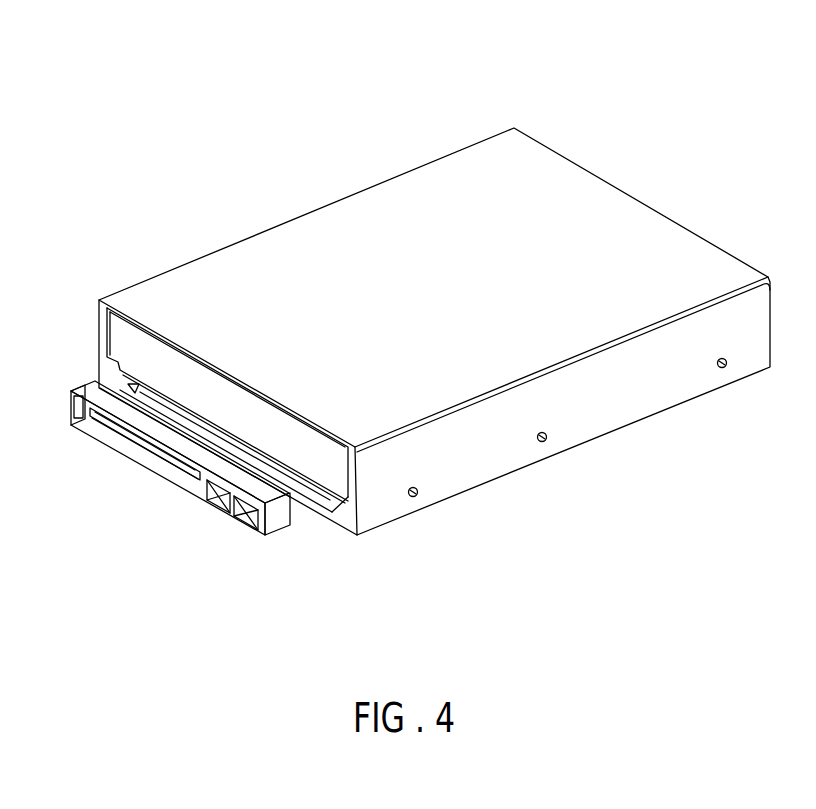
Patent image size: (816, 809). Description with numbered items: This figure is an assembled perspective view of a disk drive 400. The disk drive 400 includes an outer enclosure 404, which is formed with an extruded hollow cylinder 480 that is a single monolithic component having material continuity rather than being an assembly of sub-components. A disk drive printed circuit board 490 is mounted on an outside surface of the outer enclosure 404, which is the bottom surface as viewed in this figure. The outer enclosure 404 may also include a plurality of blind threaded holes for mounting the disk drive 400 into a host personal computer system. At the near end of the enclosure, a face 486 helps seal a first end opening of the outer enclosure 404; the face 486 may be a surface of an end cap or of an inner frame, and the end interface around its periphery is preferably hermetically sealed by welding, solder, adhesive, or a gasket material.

The disk drive 400 is at (177, 76).
The outer enclosure 404 is at (386, 152).
The extruded hollow cylinder 480 is at (282, 237).
The face 486 is at (130, 342).
The disk drive printed circuit board 490 is at (284, 516).